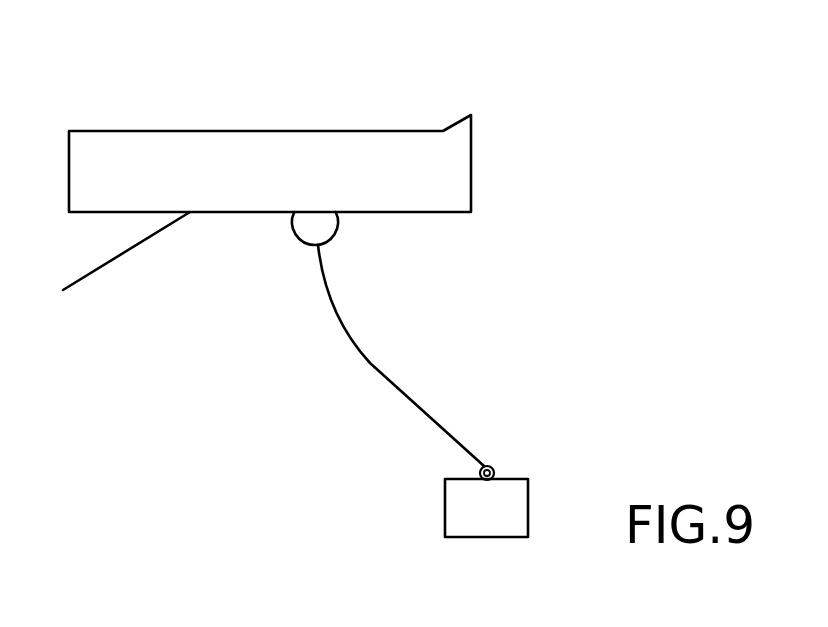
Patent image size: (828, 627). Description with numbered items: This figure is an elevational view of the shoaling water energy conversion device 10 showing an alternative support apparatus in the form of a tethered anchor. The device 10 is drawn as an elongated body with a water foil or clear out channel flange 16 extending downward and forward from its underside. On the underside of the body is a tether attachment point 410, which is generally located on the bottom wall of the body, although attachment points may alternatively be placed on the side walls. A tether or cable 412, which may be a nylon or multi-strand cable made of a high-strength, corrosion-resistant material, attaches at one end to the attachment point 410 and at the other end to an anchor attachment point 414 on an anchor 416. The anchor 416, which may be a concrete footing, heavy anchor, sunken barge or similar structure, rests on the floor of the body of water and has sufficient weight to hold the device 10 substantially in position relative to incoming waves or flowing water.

The shoaling water energy conversion device 10 is at (180, 152).
The clear out channel flange 16 is at (135, 245).
The tether attachment point 410 is at (330, 227).
The tether 412 is at (370, 363).
The anchor attachment point 414 is at (498, 466).
The anchor 416 is at (457, 510).